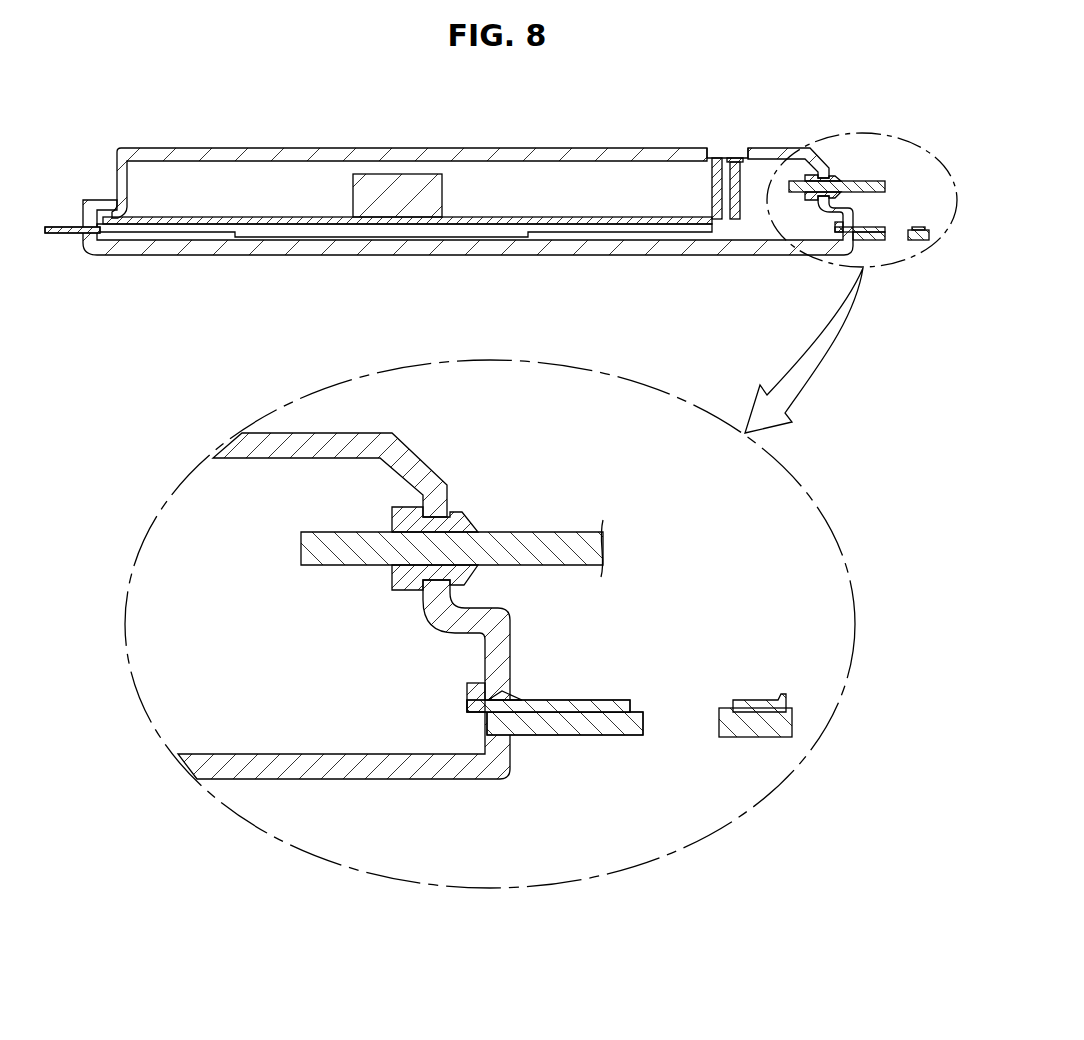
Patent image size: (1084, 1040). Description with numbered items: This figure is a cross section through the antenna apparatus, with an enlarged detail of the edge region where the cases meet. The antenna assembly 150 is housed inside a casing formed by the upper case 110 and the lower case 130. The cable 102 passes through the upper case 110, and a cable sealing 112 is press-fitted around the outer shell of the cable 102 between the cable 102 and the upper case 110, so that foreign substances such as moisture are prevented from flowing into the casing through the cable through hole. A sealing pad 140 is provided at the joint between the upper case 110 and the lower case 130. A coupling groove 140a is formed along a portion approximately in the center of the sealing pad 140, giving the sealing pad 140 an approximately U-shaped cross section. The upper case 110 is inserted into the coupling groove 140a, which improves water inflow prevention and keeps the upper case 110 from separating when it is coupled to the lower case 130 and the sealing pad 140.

The upper case 110 is at (518, 148).
The antenna assembly 150 is at (610, 217).
The lower case 130 is at (503, 256).
The sealing pad 140 is at (617, 695).
The coupling groove 140a is at (507, 696).
The cable sealing 112 is at (456, 512).
The cable 102 is at (570, 532).